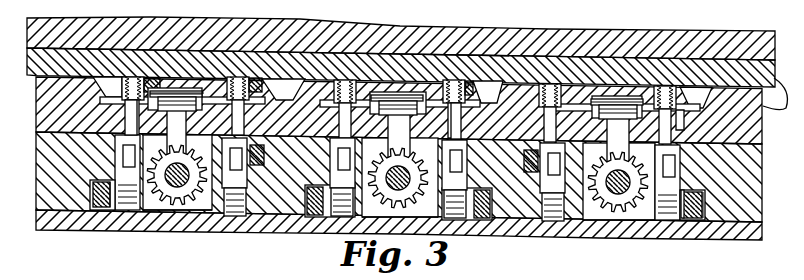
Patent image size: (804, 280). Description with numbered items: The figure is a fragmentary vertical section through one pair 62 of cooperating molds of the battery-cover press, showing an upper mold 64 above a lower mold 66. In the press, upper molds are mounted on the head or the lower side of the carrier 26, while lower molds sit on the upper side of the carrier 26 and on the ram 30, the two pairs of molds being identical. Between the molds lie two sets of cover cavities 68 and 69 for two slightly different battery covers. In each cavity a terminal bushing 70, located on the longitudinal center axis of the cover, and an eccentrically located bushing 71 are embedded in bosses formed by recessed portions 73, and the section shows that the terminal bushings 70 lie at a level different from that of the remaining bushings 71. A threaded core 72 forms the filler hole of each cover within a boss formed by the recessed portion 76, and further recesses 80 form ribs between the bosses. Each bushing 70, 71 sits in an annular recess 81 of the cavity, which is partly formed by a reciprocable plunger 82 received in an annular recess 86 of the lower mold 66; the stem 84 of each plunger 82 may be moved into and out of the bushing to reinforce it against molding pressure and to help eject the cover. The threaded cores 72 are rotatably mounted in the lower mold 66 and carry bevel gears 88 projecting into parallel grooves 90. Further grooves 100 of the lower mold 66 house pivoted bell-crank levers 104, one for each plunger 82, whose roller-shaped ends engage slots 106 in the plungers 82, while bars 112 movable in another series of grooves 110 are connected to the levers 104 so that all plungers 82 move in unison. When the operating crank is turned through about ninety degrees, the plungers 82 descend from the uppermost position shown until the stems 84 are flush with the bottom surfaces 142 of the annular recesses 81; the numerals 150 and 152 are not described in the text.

The carrier 26 is at (556, 30).
The ram 30 is at (718, 236).
The pair of cooperating molds 62 is at (780, 106).
The upper mold 64 is at (660, 60).
The lower mold 66 is at (36, 150).
The cover cavity 68 is at (100, 98).
The cover cavity 69 is at (298, 99).
The terminal bushing 70 is at (266, 97).
The bushing 71 is at (133, 78).
The threaded core 72 is at (177, 112).
The recessed portion 73 is at (150, 84).
The recessed portion 76 is at (199, 110).
The recess 80 is at (213, 97).
The annular recess 81 is at (126, 104).
The plunger 82 is at (116, 151).
The stem 84 is at (140, 88).
The annular recess 86 is at (338, 236).
The bevel gear 88 is at (416, 110).
The groove 90 is at (208, 215).
The groove 100 is at (684, 190).
The bell-crank lever 104 is at (264, 152).
The slot 106 is at (330, 168).
The groove 110 is at (106, 180).
The bar 112 is at (93, 192).
The bottom surface 142 is at (678, 120).
The gear 150 is at (160, 200).
The gear chamber 152 is at (170, 208).